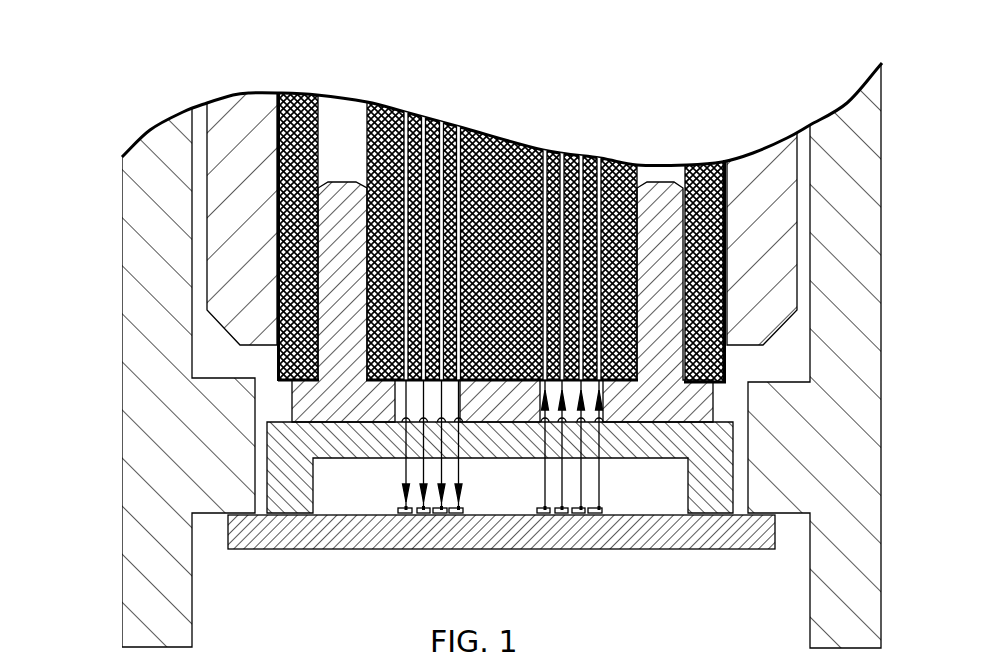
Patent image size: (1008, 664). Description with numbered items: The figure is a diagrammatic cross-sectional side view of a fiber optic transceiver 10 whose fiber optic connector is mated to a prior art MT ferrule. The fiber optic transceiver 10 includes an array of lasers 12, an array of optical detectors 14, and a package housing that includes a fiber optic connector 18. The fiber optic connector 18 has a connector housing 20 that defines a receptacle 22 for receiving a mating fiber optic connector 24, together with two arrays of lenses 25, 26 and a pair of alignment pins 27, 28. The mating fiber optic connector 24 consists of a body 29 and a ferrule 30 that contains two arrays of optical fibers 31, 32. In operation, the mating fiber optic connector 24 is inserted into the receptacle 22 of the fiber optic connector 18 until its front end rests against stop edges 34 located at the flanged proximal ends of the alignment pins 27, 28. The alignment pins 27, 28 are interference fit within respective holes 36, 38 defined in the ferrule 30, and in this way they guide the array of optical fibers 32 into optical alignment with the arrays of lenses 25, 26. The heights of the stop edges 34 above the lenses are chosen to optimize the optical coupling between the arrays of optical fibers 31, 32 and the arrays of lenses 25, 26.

The fiber optic transceiver 10 is at (721, 602).
The array of lasers 12 is at (622, 496).
The array of optical detectors 14 is at (375, 499).
The fiber optic connector 18 is at (458, 344).
The connector housing 20 is at (127, 340).
The receptacle 22 is at (243, 370).
The mating fiber optic connector 24 is at (542, 30).
The array of lenses 25 is at (473, 408).
The array of lenses 26 is at (531, 446).
The alignment pin 27 is at (347, 178).
The alignment pin 28 is at (665, 182).
The body 29 is at (230, 104).
The ferrule 30 is at (305, 94).
The array of optical fibers 31 is at (403, 100).
The array of optical fibers 32 is at (602, 142).
The stop edges 34 is at (317, 392).
The hole 36 is at (355, 95).
The hole 38 is at (649, 155).